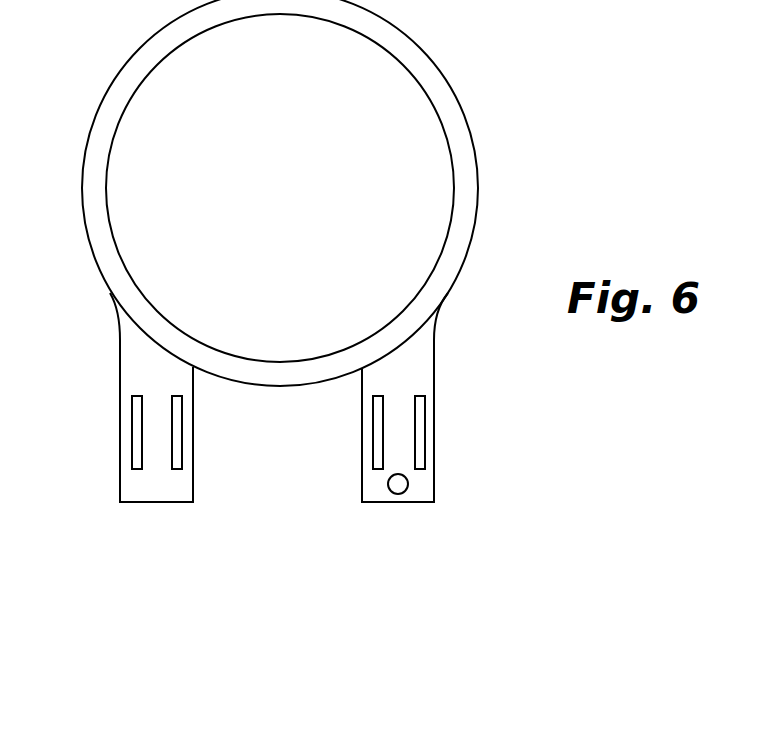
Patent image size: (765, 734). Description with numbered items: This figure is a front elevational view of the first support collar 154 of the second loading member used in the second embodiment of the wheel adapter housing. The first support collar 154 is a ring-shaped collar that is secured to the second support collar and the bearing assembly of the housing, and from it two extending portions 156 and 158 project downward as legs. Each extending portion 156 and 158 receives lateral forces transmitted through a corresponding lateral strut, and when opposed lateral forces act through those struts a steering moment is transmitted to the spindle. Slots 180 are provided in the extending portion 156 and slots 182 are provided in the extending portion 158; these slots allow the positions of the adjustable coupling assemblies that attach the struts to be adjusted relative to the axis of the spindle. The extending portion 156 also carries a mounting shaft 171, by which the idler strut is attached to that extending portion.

The first support collar 154 is at (420, 47).
The extending portion 156 is at (436, 381).
The extending portion 158 is at (119, 368).
The slots 180 is at (387, 422).
The slots 182 is at (143, 432).
The mounting shaft 171 is at (408, 485).